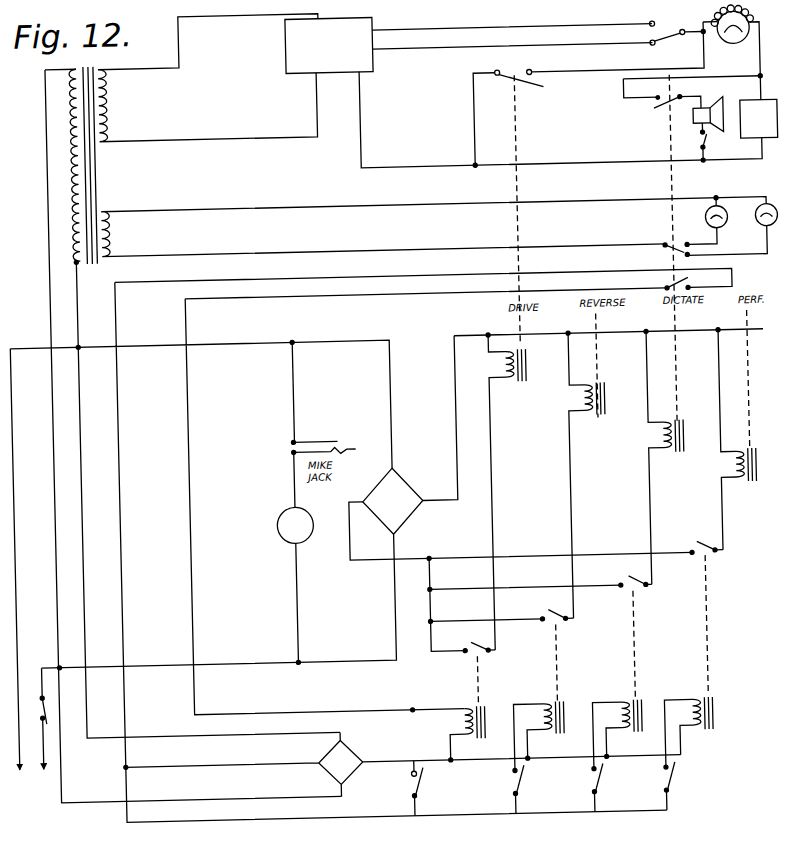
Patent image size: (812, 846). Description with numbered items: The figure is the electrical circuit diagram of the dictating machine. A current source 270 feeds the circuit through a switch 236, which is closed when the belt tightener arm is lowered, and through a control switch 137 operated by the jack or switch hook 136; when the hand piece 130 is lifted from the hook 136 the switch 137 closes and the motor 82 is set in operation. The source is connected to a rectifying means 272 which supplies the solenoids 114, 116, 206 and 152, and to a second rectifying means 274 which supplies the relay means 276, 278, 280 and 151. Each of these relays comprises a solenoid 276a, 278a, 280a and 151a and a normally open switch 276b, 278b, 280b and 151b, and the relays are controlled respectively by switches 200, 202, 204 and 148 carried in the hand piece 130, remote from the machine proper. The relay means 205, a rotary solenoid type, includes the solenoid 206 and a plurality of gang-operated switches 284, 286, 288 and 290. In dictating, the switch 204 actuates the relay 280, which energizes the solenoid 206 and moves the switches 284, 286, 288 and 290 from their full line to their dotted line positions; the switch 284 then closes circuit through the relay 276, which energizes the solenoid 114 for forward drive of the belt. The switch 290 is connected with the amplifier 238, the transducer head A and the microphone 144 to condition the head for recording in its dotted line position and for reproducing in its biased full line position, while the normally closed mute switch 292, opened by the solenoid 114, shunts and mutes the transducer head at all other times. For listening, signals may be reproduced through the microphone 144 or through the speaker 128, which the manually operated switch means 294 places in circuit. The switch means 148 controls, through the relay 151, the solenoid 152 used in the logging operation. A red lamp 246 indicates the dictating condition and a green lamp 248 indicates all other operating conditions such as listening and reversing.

The amplifier 238 is at (306, 68).
The switch 290 is at (679, 37).
The transducer head A is at (761, 23).
The hand piece 130 is at (771, 97).
The mute switch 292 is at (552, 90).
The speaker 128 is at (712, 112).
The microphone 144 is at (760, 108).
The switch 288 is at (676, 108).
The switch means 294 is at (714, 148).
The green lamp 248 is at (724, 214).
The red lamp 246 is at (771, 212).
The switch 286 is at (668, 249).
The switch 284 is at (668, 292).
The solenoid 114 is at (524, 388).
The solenoid 116 is at (600, 419).
The relay means 205 is at (680, 374).
The solenoid 206 is at (677, 457).
The solenoid 152 is at (751, 489).
The switch of relay 151 151b is at (708, 553).
The control switch 137 is at (332, 438).
The jack or switch hook 136 is at (350, 448).
The rectifying means 272 is at (411, 476).
The motor 82 is at (274, 532).
The switch of relay 280 280b is at (624, 582).
The switch of relay 278 278b is at (544, 614).
The switch of relay 276 276b is at (466, 645).
The relay means 280 is at (628, 646).
The relay means 278 is at (550, 659).
The relay 151 is at (701, 637).
The relay means 276 is at (471, 672).
The solenoid of relay 276 276a is at (460, 709).
The solenoid of relay 278 278a is at (540, 707).
The solenoid of relay 280 280a is at (618, 706).
The solenoid of relay 151 151a is at (690, 705).
The rectifying means 274 is at (357, 753).
The switch 236 is at (33, 697).
The current source 270 is at (28, 745).
The switch 200 is at (420, 787).
The switch 202 is at (512, 782).
The switch 204 is at (581, 786).
The switch means 148 is at (661, 782).